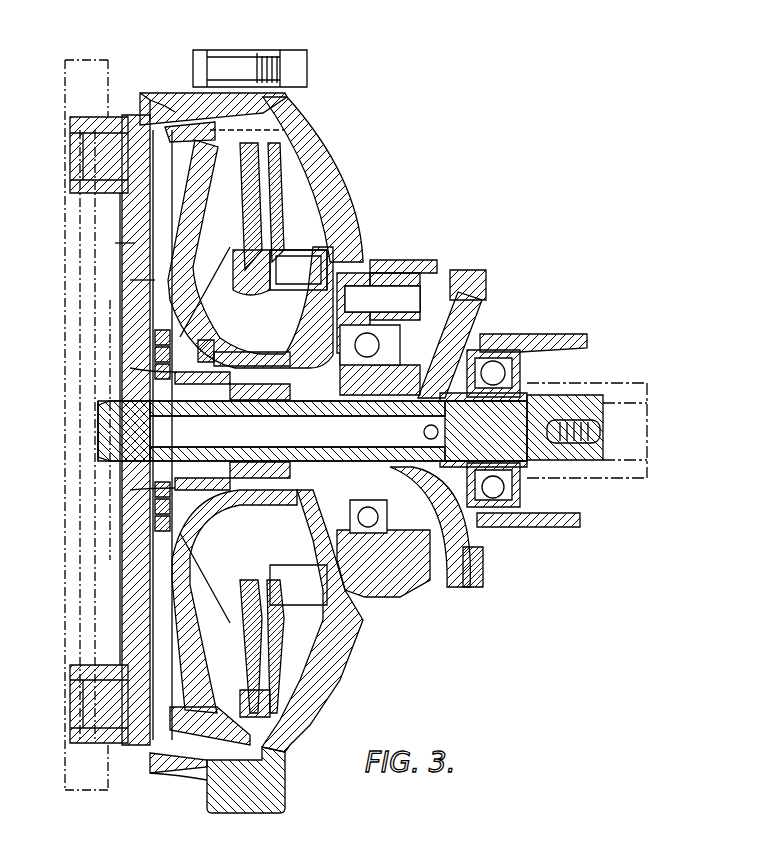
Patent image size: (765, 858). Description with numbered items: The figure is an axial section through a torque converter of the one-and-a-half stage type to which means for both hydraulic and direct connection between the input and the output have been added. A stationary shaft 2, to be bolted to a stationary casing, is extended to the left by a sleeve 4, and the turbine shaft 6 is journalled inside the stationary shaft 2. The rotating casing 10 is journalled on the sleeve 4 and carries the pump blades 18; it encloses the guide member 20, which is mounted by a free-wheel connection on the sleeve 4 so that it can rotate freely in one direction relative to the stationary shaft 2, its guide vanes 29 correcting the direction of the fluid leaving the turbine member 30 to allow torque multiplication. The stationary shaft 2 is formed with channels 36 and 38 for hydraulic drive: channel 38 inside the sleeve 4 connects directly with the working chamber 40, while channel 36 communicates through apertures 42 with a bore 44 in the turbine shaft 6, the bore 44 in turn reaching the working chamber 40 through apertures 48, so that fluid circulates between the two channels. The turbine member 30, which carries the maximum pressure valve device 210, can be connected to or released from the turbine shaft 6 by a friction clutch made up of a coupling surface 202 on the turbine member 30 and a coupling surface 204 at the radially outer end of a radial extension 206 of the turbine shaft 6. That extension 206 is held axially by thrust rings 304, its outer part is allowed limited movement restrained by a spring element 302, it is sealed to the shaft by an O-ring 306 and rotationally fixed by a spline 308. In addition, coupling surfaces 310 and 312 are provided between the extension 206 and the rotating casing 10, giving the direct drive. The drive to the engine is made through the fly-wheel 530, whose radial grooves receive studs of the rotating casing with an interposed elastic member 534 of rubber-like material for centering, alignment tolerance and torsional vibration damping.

The stationary shaft 2 is at (476, 276).
The sleeve 4 is at (302, 402).
The turbine shaft 6 is at (600, 432).
The rotating casing 10 is at (340, 208).
The pump blades 18 is at (280, 430).
The guide member 20 is at (315, 518).
The guide vanes 29 is at (298, 585).
The turbine member 30 is at (250, 254).
The channel 36 is at (490, 336).
The channel 38 is at (490, 530).
The working chamber 40 is at (298, 287).
The apertures 42 is at (418, 410).
The bore 44 is at (364, 445).
The apertures 48 is at (144, 420).
The coupling surface 202 is at (285, 130).
The coupling surface 204 is at (283, 93).
The extension 206 is at (130, 280).
The maximum pressure valve device 210 is at (205, 352).
The spring element 302 is at (115, 243).
The thrust rings 304 is at (246, 412).
The O-ring 306 is at (178, 414).
The spline 308 is at (228, 414).
The coupling surface 310 is at (140, 97).
The coupling surface 312 is at (145, 95).
The fly-wheel 530 is at (85, 568).
The elastic member 534 is at (115, 740).